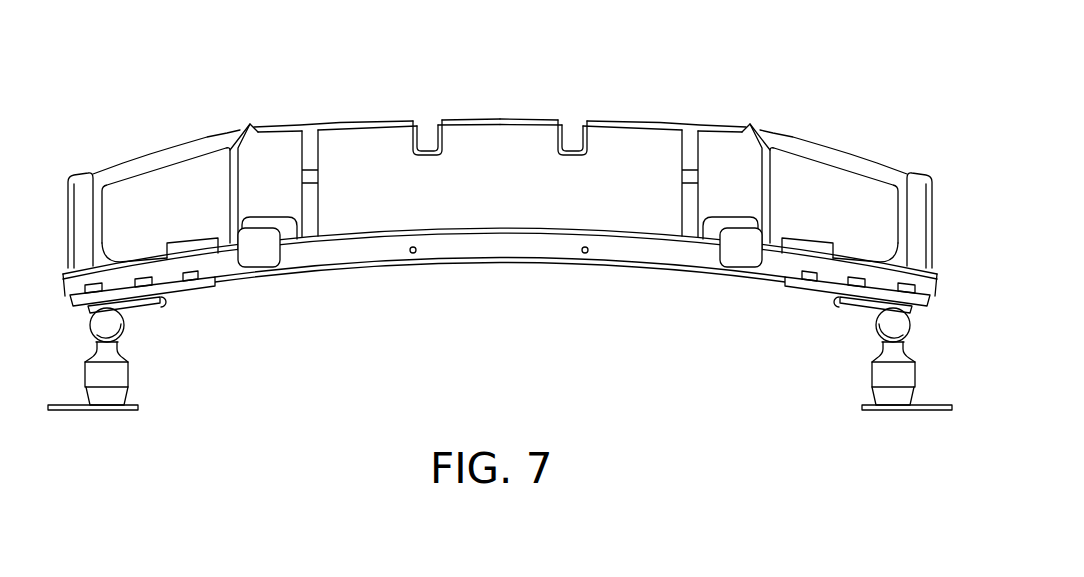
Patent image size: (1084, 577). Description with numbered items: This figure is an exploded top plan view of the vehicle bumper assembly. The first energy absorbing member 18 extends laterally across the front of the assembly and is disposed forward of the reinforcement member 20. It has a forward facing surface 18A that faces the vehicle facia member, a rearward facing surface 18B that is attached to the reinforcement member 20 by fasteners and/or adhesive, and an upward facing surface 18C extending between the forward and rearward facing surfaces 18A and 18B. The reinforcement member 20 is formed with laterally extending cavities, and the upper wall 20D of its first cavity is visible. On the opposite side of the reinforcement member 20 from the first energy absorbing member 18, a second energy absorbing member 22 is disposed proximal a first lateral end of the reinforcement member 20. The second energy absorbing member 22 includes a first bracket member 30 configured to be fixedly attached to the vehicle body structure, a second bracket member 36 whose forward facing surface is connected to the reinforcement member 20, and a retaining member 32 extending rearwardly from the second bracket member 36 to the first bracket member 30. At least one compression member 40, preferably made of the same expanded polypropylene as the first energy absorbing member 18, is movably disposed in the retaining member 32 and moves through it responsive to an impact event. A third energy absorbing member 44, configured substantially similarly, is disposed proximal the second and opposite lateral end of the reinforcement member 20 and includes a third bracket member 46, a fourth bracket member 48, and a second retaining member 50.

The first energy absorbing member 18 is at (508, 119).
The forward facing surface 18A is at (378, 121).
The rearward facing surface 18B is at (508, 231).
The upward facing surface 18C is at (629, 158).
The reinforcement member 20 is at (402, 267).
The upper wall 20D is at (617, 248).
The second energy absorbing member 22 is at (128, 389).
The first bracket member 30 is at (60, 411).
The retaining member 32 is at (83, 374).
The second bracket member 36 is at (197, 287).
The compression member 40 is at (126, 330).
The third energy absorbing member 44 is at (871, 389).
The third bracket member 46 is at (939, 412).
The fourth bracket member 48 is at (803, 288).
The second retaining member 50 is at (917, 374).